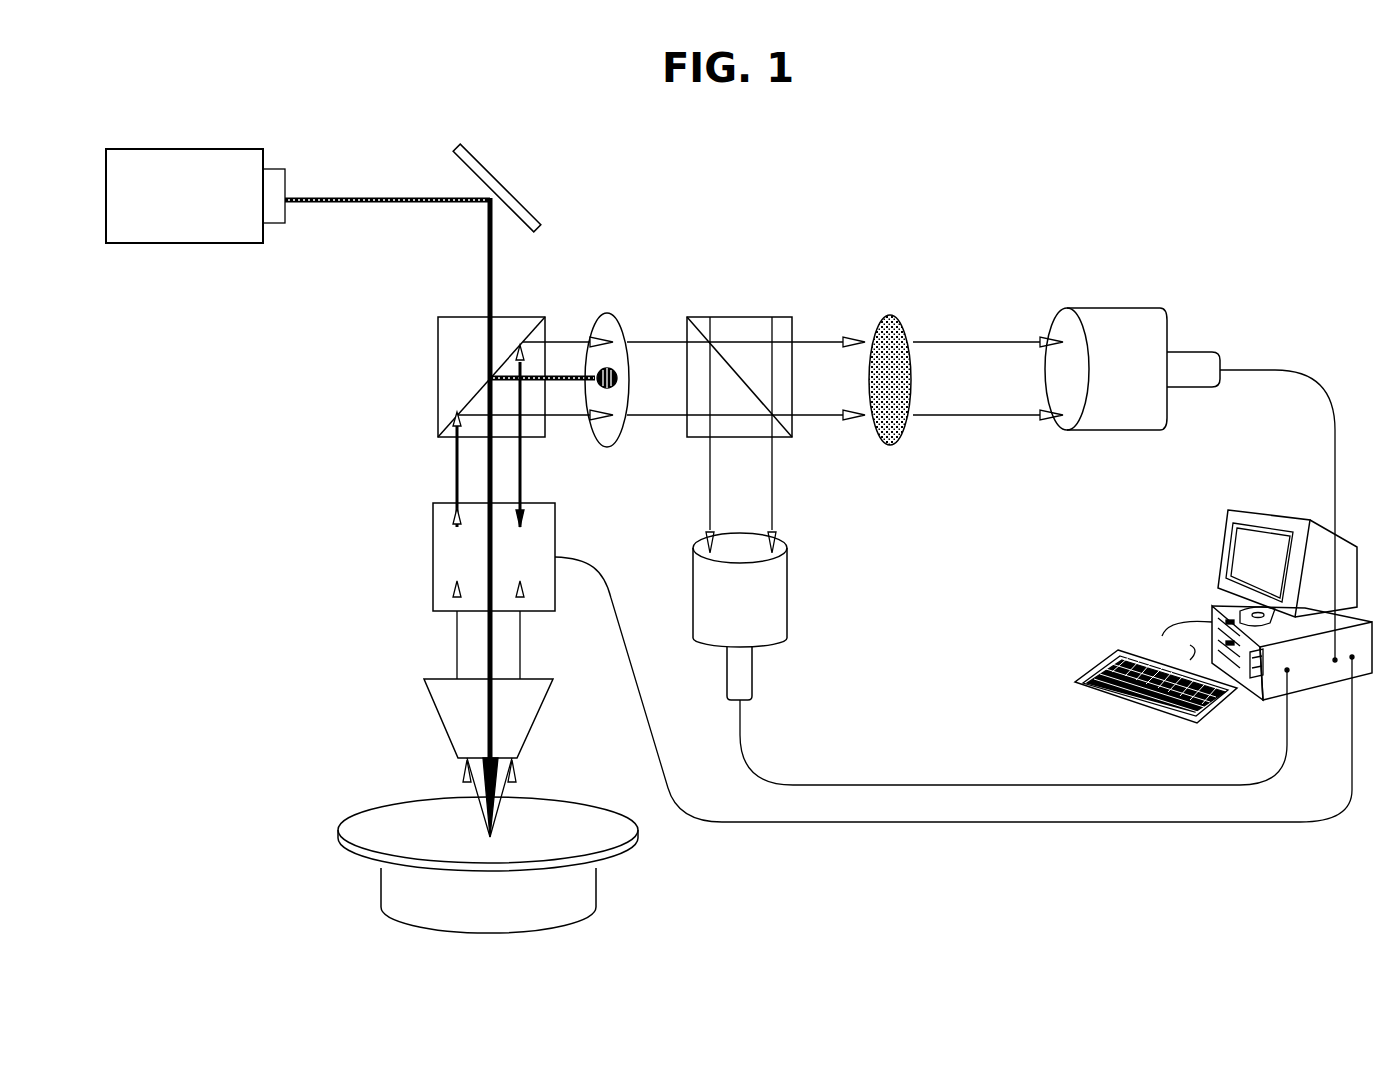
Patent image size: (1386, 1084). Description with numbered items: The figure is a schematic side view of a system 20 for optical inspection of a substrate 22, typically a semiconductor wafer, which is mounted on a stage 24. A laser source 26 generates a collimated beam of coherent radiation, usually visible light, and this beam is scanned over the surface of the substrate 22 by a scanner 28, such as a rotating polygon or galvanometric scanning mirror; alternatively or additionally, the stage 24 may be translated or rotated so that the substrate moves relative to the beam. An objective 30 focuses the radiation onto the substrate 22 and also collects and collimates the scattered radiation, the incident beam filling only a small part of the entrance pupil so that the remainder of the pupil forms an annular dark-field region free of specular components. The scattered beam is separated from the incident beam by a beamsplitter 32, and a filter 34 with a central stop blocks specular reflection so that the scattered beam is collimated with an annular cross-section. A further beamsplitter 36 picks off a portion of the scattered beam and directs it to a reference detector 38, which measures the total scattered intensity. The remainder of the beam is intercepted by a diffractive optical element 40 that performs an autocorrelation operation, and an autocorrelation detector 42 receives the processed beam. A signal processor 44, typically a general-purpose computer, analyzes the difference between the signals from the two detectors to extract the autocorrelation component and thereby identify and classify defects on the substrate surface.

The system 20 is at (1142, 190).
The substrate 22 is at (341, 822).
The stage 24 is at (381, 876).
The laser source 26 is at (186, 149).
The scanner 28 is at (443, 503).
The objective 30 is at (545, 702).
The beamsplitter 32 is at (457, 317).
The filter 34 is at (616, 314).
The further beamsplitter 36 is at (748, 317).
The reference detector 38 is at (787, 615).
The diffractive optical element 40 is at (888, 315).
The autocorrelation detector 42 is at (1100, 308).
The signal processor 44 is at (1337, 682).